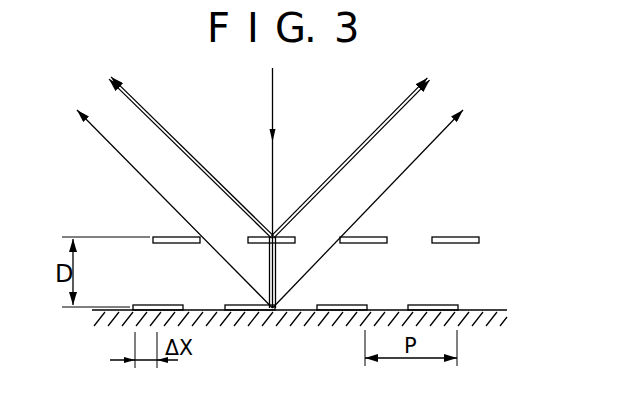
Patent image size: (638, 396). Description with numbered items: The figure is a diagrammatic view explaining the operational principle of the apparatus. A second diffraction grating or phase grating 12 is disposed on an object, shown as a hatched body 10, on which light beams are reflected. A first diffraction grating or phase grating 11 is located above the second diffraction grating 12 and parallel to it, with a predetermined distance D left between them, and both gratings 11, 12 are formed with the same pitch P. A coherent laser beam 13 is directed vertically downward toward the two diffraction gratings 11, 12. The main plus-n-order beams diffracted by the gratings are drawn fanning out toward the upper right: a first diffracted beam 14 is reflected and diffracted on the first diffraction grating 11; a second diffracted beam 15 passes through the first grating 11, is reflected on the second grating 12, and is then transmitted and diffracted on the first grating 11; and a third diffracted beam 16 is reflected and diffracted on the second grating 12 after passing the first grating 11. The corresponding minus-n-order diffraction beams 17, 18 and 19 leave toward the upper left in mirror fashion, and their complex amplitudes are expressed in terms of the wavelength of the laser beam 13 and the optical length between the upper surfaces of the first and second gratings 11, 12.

The substrate 10 is at (119, 314).
The first diffraction grating 11 is at (451, 237).
The second diffraction grating 12 is at (458, 305).
The laser beam 13 is at (274, 166).
The first diffracted beam 14 is at (392, 112).
The second diffracted beam 15 is at (396, 117).
The third diffracted beam 16 is at (427, 150).
The -n-order diffraction beam 17 is at (160, 122).
The -n-order diffraction beam 18 is at (170, 141).
The -n-order diffraction beam 19 is at (133, 167).